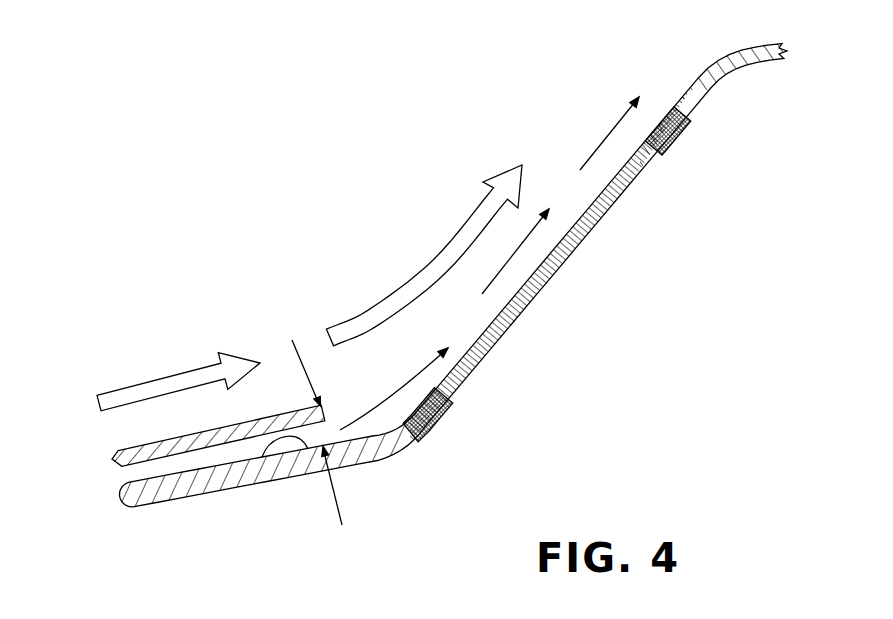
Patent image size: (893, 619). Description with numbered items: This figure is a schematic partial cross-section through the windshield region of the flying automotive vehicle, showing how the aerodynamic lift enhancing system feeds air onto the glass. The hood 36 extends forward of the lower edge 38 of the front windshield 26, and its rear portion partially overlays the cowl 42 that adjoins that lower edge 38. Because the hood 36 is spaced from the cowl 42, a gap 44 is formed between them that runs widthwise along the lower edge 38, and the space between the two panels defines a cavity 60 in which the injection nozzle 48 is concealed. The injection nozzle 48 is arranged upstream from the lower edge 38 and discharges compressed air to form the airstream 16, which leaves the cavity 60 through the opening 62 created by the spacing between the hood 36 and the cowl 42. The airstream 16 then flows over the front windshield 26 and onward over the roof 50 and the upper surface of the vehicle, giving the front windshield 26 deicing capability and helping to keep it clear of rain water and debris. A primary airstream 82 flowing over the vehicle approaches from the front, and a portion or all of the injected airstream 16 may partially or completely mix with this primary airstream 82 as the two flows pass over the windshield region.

The airstream 16 is at (390, 400).
The front windshield 26 is at (537, 295).
The hood 36 is at (279, 414).
The lower edge 38 is at (457, 392).
The cowl 42 is at (218, 492).
The gap 44 is at (338, 508).
The injection nozzle 48 is at (286, 449).
The roof 50 is at (727, 57).
The cavity 60 is at (212, 452).
The opening 62 is at (324, 433).
The primary airstream 82 is at (128, 388).